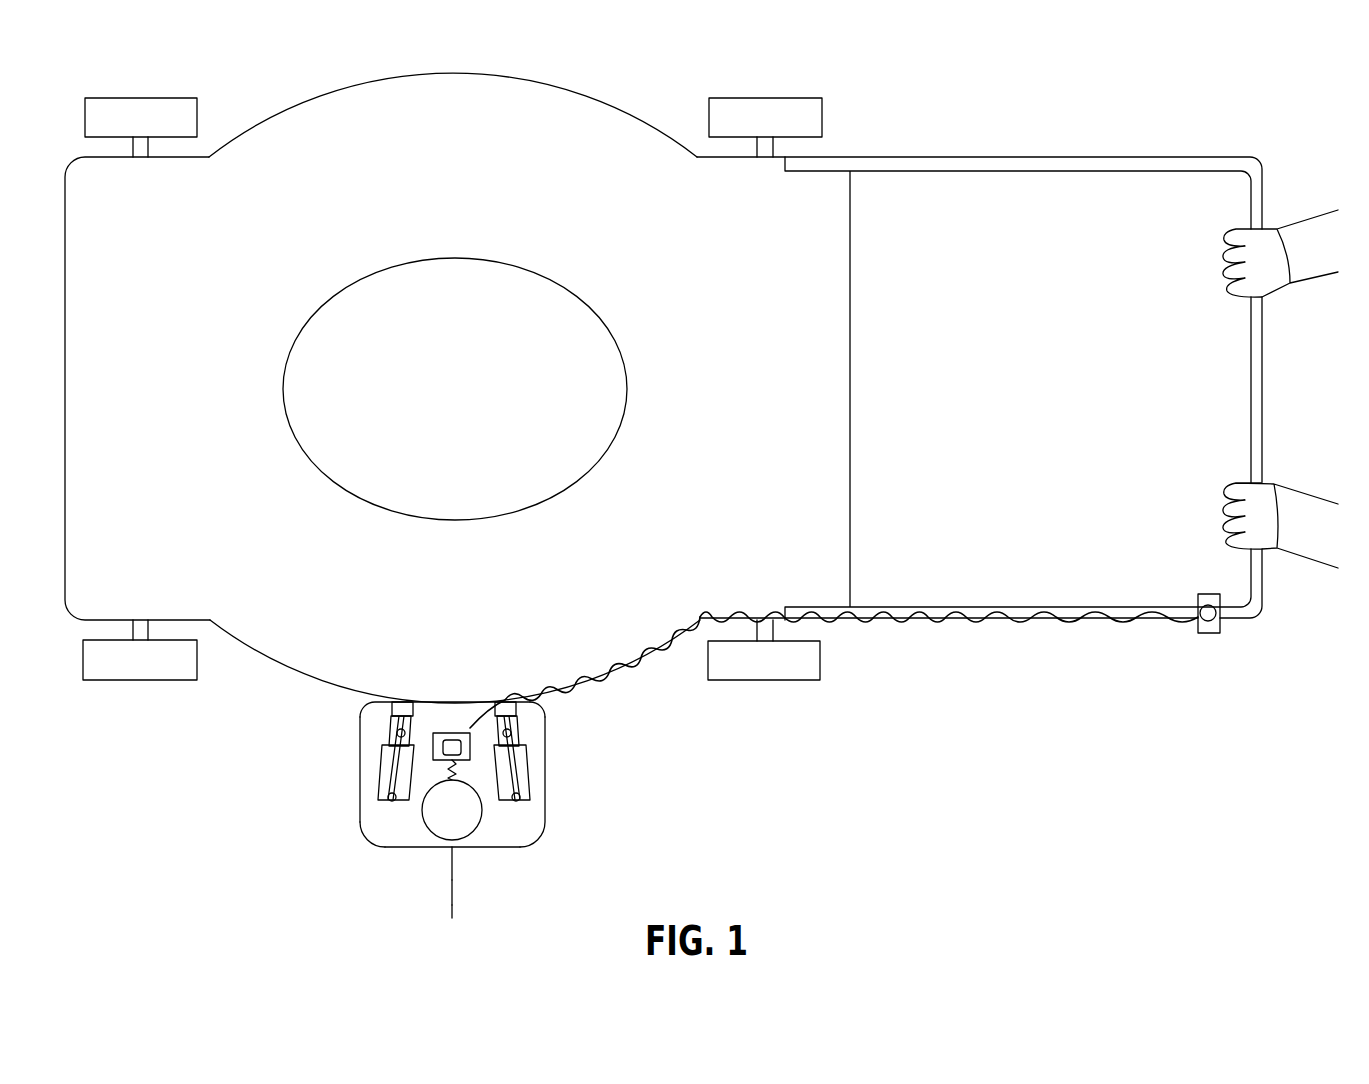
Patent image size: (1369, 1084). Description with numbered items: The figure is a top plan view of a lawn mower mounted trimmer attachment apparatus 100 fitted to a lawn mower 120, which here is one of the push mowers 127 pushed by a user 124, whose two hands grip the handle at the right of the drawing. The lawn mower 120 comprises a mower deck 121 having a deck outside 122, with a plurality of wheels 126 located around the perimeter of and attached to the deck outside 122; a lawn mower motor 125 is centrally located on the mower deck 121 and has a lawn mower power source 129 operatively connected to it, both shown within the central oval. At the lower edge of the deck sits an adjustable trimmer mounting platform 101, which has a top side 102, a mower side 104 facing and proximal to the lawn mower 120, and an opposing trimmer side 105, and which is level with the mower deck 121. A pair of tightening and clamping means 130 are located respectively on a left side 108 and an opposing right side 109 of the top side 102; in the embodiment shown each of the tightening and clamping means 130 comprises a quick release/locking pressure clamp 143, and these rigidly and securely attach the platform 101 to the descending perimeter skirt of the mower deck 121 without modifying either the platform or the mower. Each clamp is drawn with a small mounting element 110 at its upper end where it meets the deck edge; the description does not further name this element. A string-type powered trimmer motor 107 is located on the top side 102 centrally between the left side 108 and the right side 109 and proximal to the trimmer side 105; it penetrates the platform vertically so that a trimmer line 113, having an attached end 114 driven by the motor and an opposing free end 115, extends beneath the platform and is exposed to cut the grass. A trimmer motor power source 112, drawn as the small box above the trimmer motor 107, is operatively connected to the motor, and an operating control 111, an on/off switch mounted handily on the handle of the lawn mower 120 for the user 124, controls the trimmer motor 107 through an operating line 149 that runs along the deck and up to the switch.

The lawn mower mounted trimmer attachment apparatus 100 is at (585, 787).
The adjustable trimmer mounting platform 101 is at (382, 823).
The top side 102 is at (507, 825).
The mower side 104 is at (368, 698).
The opposing trimmer side 105 is at (462, 847).
The string-type powered trimmer motor 107 is at (477, 822).
The left side 108 is at (362, 783).
The opposing right side 109 is at (545, 725).
The mounting bracket 110 is at (402, 702).
The operating control 111 is at (1210, 633).
The trimmer motor power source 112 is at (453, 733).
The trimmer line 113 is at (455, 895).
The attached end 114 is at (455, 847).
The opposing free end 115 is at (450, 920).
The lawn mower 120 is at (481, 185).
The mower deck 121 is at (287, 667).
The deck outside 122 is at (632, 663).
The user 124 is at (1222, 490).
The lawn mower motor 125 is at (474, 402).
The wheels 126 is at (146, 98).
The push mower 127 is at (912, 648).
The lawn mower power source 129 is at (455, 389).
The tightening and clamping means 130 is at (517, 767).
The quick release/locking pressure clamp 143 is at (363, 772).
The operating line 149 is at (993, 625).